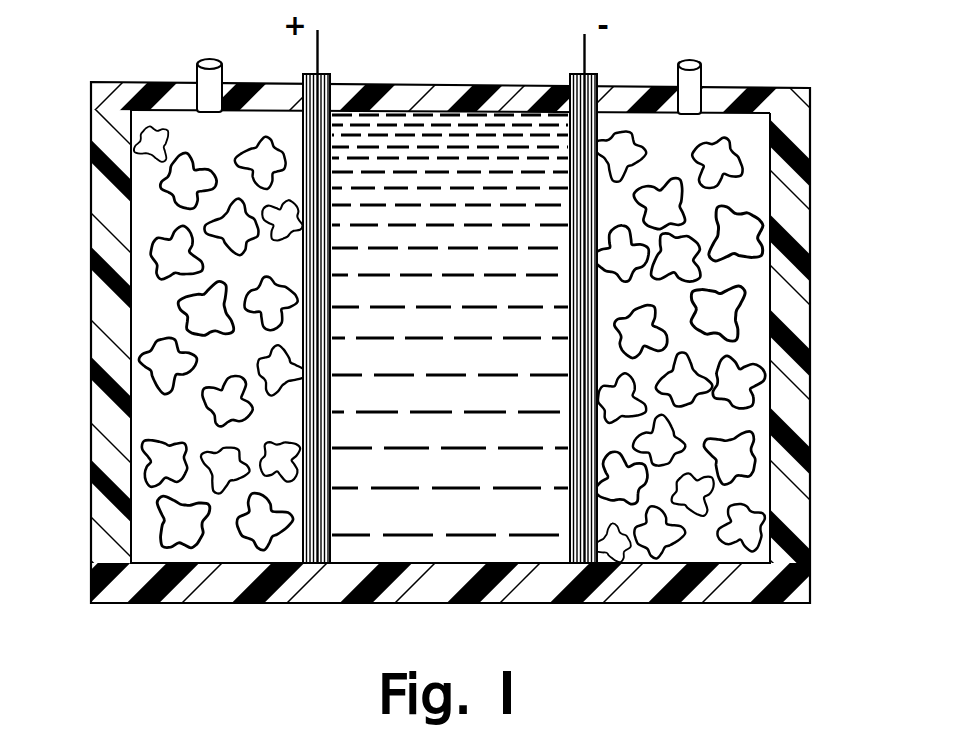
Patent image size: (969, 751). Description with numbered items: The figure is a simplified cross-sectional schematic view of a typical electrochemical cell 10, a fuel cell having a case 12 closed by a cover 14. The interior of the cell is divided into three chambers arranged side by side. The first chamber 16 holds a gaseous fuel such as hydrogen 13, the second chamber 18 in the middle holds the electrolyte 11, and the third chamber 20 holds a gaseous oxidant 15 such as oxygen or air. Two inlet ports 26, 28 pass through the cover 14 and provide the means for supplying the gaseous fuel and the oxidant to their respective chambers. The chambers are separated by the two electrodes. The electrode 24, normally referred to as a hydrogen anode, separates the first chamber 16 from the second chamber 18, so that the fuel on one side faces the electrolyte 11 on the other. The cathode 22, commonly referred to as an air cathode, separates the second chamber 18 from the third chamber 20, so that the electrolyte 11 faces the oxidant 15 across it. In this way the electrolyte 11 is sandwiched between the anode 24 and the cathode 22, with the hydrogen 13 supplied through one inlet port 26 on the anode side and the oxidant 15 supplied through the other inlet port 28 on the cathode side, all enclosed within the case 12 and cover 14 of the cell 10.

The electrochemical cell 10 is at (86, 305).
The electrolyte 11 is at (350, 552).
The case 12 is at (108, 455).
The hydrogen 13 is at (152, 213).
The cover 14 is at (745, 98).
The gaseous oxidant 15 is at (752, 347).
The first chamber 16 is at (140, 535).
The second chamber 18 is at (550, 552).
The third chamber 20 is at (695, 552).
The cathode 22 is at (600, 70).
The electrode 24 is at (333, 70).
The inlet port 26 is at (194, 72).
The inlet port 28 is at (705, 72).